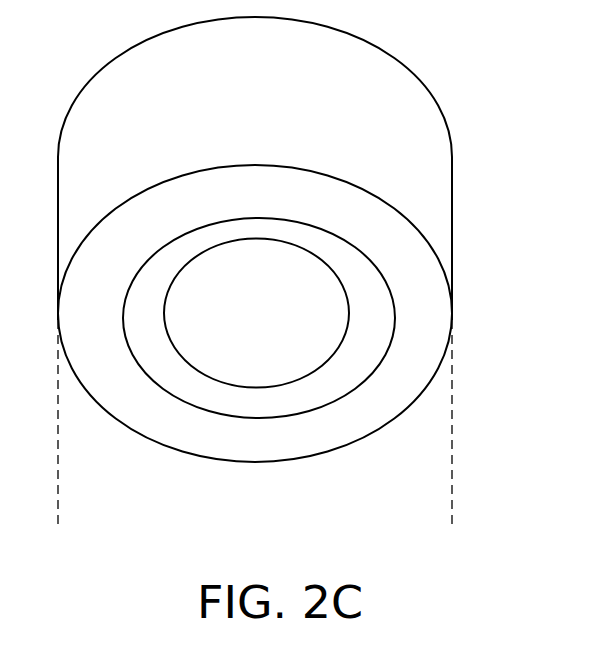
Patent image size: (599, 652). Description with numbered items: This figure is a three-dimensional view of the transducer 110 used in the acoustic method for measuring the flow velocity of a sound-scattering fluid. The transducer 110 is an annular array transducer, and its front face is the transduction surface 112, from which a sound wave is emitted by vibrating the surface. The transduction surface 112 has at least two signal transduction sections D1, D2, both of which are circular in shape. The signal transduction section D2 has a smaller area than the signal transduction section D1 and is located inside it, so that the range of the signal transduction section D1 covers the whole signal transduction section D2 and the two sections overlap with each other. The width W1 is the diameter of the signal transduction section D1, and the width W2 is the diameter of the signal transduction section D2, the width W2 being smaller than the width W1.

The transducer 110 is at (327, 283).
The transduction surface 112 is at (550, 205).
The signal transduction section D1 is at (412, 328).
The signal transduction section D2 is at (295, 280).
The width of the signal transduction section D1 W1 is at (255, 490).
The width of the signal transduction section D2 W2 is at (349, 313).